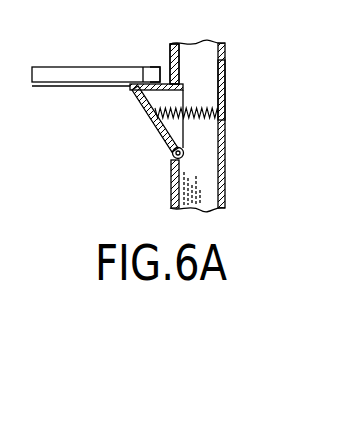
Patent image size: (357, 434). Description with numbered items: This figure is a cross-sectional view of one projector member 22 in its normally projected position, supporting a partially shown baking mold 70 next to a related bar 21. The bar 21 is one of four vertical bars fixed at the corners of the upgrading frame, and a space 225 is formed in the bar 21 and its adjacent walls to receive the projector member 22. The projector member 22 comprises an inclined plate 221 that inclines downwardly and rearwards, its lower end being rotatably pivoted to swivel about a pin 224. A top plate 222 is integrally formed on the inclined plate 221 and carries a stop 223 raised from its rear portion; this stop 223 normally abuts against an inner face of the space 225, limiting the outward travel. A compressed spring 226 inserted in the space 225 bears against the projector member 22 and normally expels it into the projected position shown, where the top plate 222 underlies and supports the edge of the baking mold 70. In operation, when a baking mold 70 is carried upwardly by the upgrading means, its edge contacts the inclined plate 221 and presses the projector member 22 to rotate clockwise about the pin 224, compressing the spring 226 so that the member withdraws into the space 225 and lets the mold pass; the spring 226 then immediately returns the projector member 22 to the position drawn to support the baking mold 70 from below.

The bar 21 is at (226, 178).
The projector member 22 is at (138, 143).
The baking mold 70 is at (68, 86).
The inclined plate 221 is at (142, 113).
The top plate 222 is at (167, 78).
The stop 223 is at (181, 83).
The pin 224 is at (172, 161).
The space 225 is at (202, 92).
The compressed spring 226 is at (199, 124).